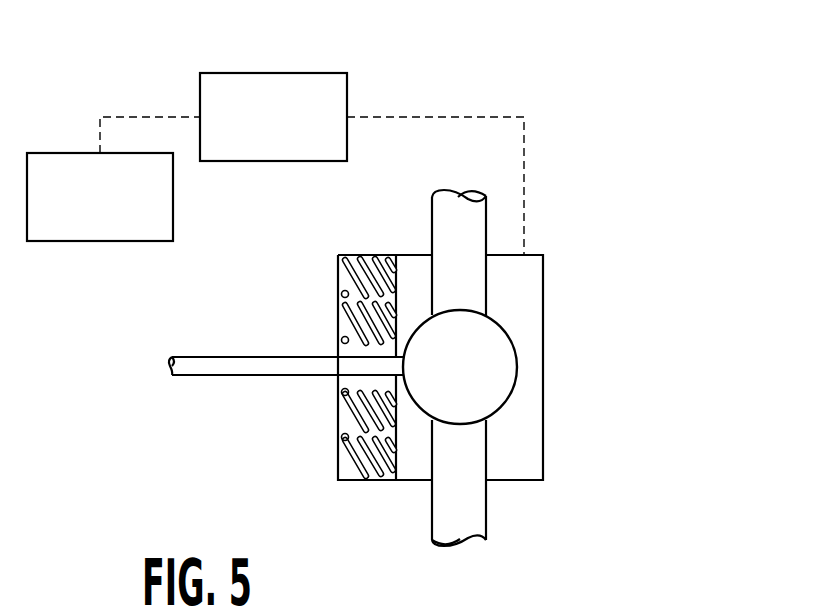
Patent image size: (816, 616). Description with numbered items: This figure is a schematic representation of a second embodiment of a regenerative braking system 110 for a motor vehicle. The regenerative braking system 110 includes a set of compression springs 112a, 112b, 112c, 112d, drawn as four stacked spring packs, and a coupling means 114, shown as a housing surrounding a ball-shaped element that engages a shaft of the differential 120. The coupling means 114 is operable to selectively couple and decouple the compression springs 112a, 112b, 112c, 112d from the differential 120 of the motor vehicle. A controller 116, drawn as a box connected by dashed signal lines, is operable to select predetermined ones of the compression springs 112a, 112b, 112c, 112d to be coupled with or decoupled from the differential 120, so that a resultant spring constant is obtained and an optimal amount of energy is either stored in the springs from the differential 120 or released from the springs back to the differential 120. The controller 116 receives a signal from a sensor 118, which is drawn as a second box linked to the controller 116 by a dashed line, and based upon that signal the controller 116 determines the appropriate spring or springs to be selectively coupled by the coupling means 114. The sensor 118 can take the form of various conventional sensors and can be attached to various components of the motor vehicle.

The regenerative braking system 110 is at (632, 58).
The compression spring 112a is at (338, 268).
The compression spring 112b is at (338, 313).
The compression spring 112c is at (338, 405).
The compression spring 112d is at (338, 450).
The coupling means 114 is at (518, 423).
The controller 116 is at (240, 73).
The sensor 118 is at (53, 153).
The differential 120 is at (492, 341).